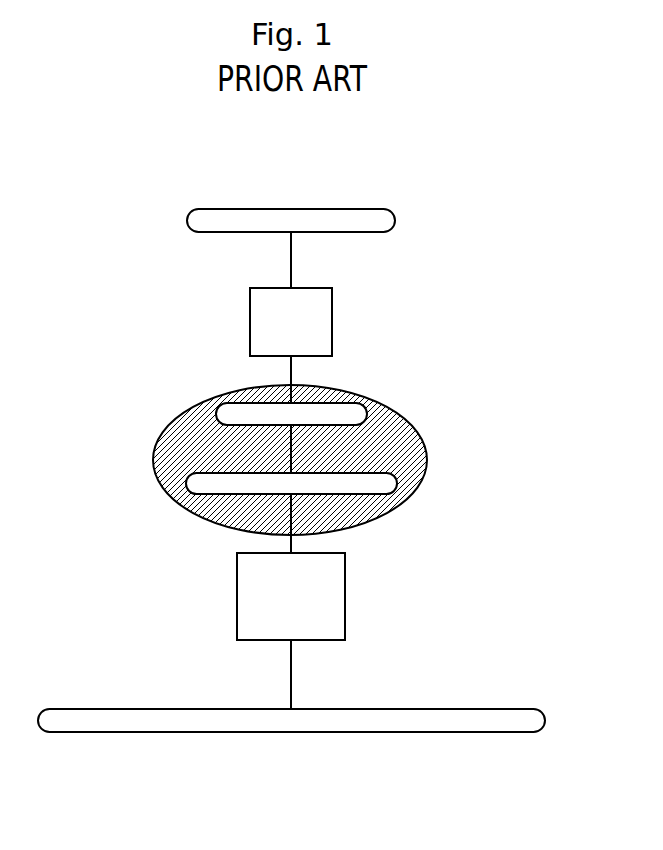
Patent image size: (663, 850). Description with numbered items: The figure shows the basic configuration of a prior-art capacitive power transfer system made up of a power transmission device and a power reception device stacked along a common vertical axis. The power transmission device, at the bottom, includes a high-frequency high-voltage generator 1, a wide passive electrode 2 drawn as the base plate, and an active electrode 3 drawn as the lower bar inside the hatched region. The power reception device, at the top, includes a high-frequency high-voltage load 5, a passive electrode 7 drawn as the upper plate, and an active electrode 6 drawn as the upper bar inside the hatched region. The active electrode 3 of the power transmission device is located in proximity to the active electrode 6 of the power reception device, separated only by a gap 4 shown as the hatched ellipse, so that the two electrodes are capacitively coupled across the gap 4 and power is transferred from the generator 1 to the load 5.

The high-frequency high-voltage generator 1 is at (345, 593).
The passive electrode 2 is at (470, 708).
The active electrode 3 is at (380, 483).
The gap 4 is at (407, 448).
The high-frequency high-voltage load 5 is at (332, 318).
The active electrode 6 is at (360, 417).
The passive electrode 7 is at (361, 208).